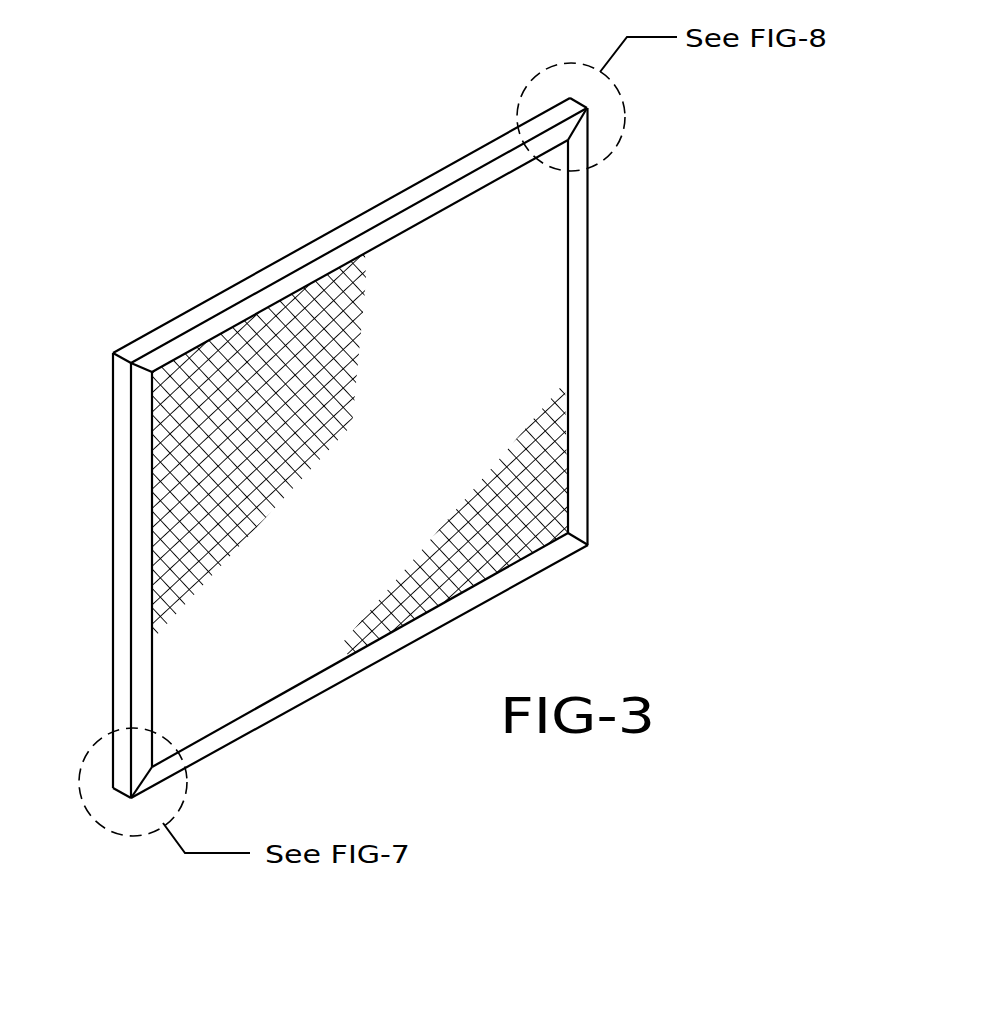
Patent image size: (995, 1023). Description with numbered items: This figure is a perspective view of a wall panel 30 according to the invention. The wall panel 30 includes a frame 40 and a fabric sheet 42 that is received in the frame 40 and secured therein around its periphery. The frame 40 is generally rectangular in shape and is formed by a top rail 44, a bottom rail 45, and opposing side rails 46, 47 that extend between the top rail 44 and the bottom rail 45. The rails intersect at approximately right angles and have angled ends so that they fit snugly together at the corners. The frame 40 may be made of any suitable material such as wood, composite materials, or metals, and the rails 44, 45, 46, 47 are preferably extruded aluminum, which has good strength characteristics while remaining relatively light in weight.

The wall panel 30 is at (368, 448).
The frame 40 is at (385, 448).
The fabric sheet 42 is at (173, 660).
The top rail 44 is at (200, 317).
The bottom rail 45 is at (268, 710).
The side rail 46 is at (120, 558).
The side rail 47 is at (578, 435).